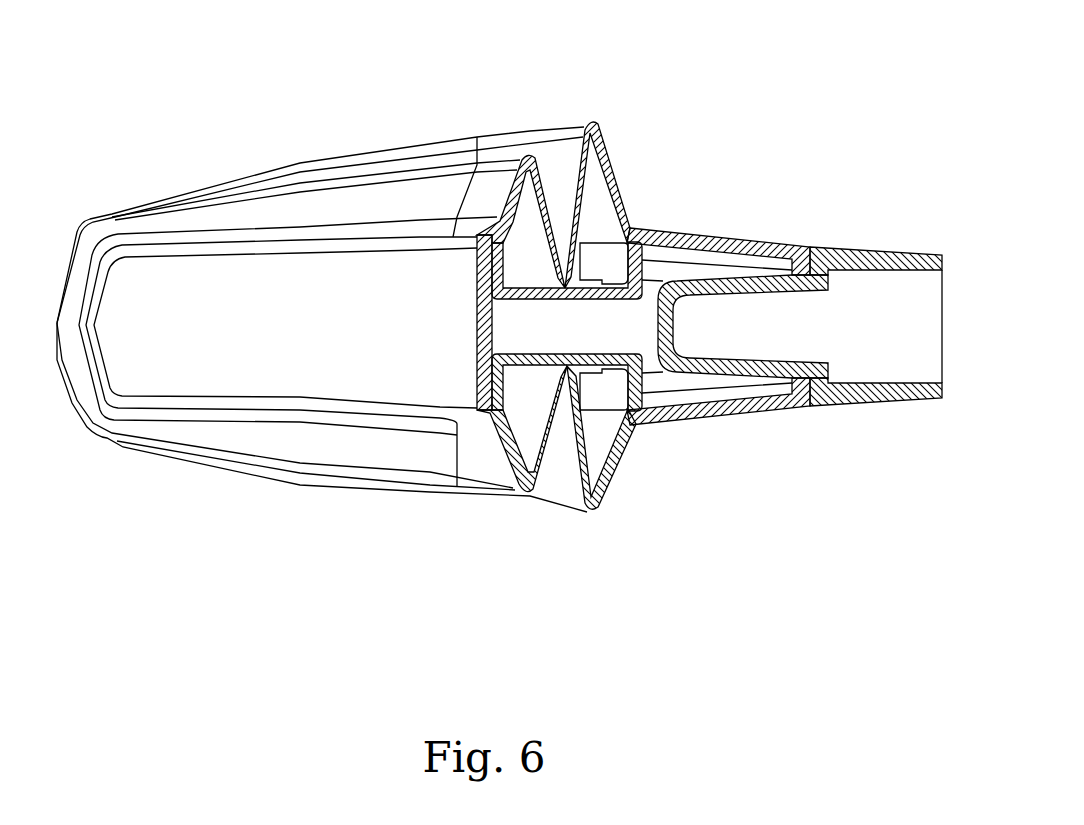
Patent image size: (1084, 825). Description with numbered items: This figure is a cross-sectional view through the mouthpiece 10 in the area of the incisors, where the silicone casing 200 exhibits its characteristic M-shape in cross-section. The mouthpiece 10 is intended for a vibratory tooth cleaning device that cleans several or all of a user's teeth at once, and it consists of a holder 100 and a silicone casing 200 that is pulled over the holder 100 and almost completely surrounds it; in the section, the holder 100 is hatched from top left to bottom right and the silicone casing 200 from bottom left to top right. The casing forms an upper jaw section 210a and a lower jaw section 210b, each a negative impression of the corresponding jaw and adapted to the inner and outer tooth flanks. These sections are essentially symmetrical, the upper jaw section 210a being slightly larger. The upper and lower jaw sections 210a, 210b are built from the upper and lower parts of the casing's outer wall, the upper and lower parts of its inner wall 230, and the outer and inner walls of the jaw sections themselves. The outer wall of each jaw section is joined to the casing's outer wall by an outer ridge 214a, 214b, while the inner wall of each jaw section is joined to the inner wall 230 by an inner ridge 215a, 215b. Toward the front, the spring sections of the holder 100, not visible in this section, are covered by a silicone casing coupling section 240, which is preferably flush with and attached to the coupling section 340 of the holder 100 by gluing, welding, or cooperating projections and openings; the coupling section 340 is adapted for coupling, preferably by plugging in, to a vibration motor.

The mouthpiece 10 is at (717, 84).
The holder 100 is at (639, 398).
The silicone casing 200 is at (215, 166).
The upper jaw section 210a is at (560, 198).
The lower jaw section 210b is at (559, 470).
The outer ridge of upper jaw section 214a is at (596, 117).
The outer ridge of lower jaw section 214b is at (601, 520).
The inner ridge of upper jaw section 215a is at (518, 160).
The inner ridge of lower jaw section 215b is at (518, 499).
The inner wall of silicone casing 230 is at (470, 340).
The silicone casing coupling section 240 is at (703, 228).
The coupling section of holder 340 is at (705, 283).